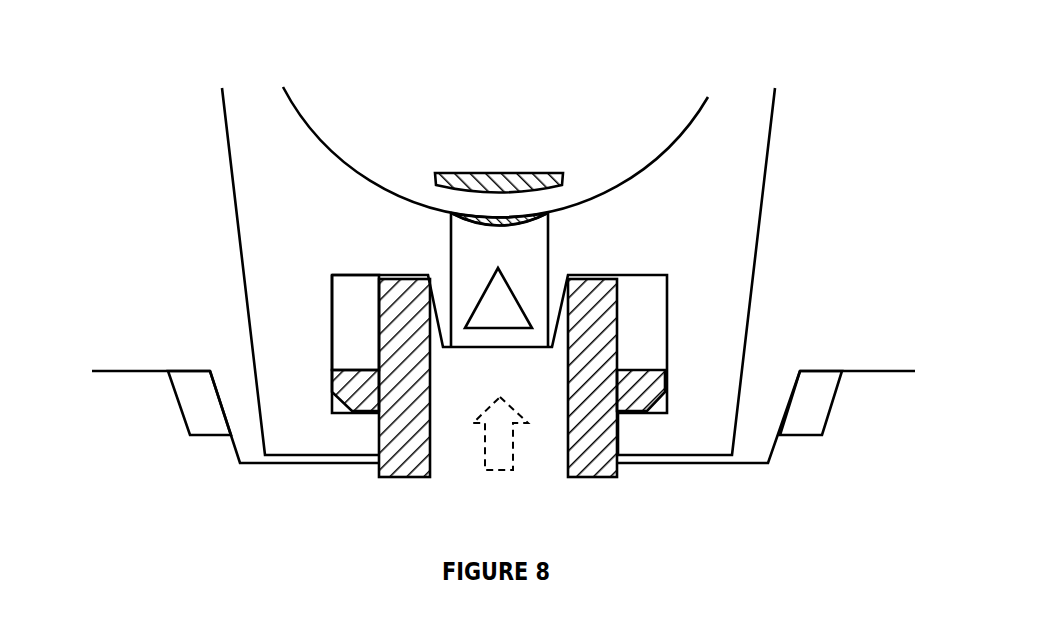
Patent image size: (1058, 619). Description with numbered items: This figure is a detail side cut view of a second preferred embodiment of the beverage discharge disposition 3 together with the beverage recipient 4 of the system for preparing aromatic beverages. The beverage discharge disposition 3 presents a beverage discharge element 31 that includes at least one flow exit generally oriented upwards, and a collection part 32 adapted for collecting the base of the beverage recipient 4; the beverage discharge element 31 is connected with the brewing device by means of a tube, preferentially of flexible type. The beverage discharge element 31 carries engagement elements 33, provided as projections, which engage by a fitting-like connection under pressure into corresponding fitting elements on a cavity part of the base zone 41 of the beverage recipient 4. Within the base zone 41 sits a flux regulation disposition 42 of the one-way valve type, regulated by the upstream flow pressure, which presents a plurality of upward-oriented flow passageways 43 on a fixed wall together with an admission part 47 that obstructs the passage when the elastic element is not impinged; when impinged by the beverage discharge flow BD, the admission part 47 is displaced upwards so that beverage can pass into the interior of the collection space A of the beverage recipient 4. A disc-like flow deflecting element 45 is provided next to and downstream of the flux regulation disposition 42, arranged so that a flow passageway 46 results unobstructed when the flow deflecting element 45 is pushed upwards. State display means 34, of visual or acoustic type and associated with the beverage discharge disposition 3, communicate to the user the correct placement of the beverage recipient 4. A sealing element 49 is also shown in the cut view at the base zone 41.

The collection space A is at (495, 130).
The beverage recipient 4 is at (498, 258).
The beverage discharge disposition 3 is at (503, 358).
The state display means 34 is at (190, 364).
The collection part 32 is at (498, 429).
The beverage discharge element 31 is at (498, 378).
The base zone 41 is at (499, 345).
The flow passageway 46 is at (323, 322).
The seal 49 is at (355, 409).
The engagement elements 33 is at (641, 374).
The flux regulation disposition 42 is at (560, 257).
The flow passageways 43 is at (530, 209).
The flow deflecting element 45 is at (485, 170).
The admission part 47 is at (498, 336).
The beverage discharge flow BD is at (516, 433).